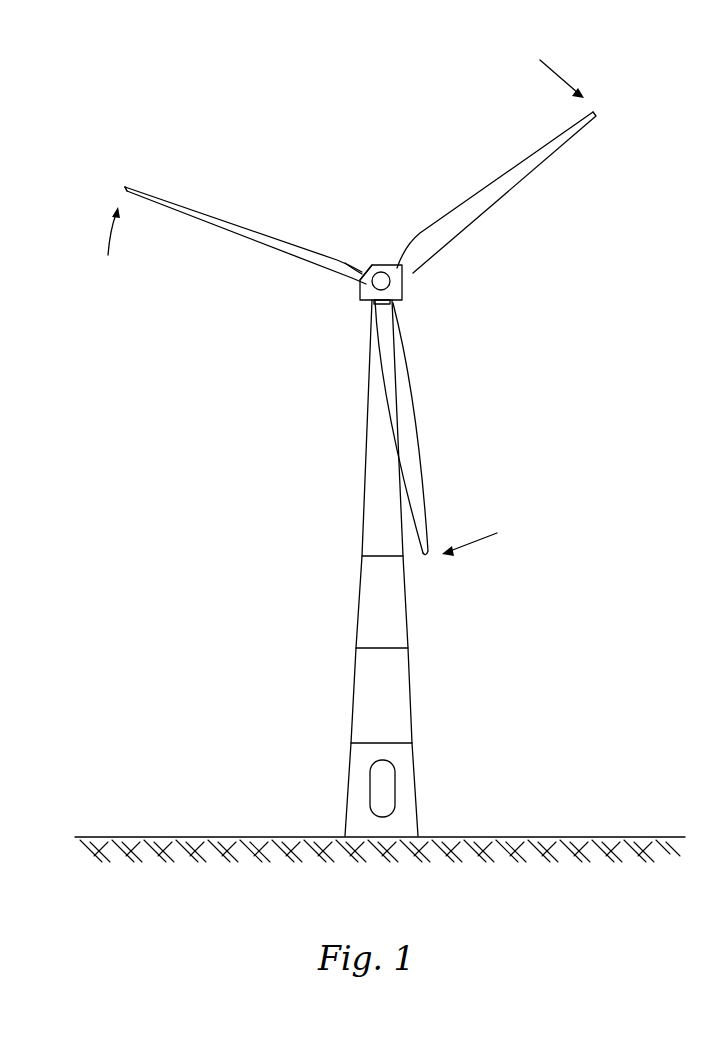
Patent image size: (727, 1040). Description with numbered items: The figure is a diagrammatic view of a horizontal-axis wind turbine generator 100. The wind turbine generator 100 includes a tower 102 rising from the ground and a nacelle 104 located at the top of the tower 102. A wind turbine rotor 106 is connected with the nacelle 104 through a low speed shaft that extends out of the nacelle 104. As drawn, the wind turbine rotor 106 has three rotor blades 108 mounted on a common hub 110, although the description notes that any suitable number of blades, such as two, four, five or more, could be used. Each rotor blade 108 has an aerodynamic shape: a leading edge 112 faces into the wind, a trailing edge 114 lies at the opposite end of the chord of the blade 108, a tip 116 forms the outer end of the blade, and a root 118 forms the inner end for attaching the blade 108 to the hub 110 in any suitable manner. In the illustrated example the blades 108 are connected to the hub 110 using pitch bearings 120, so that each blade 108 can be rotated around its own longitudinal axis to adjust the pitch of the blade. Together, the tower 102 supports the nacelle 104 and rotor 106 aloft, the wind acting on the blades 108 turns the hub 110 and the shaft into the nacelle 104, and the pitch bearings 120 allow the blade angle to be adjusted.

The wind turbine generator 100 is at (361, 461).
The tower 102 is at (364, 608).
The nacelle 104 is at (368, 303).
The wind turbine rotor 106 is at (316, 308).
The rotor blade 108 is at (316, 308).
The hub 110 is at (381, 271).
The leading edge 112 is at (222, 214).
The trailing edge 114 is at (233, 245).
The tip 116 is at (108, 173).
The root 118 is at (352, 294).
The pitch bearing 120 is at (356, 270).